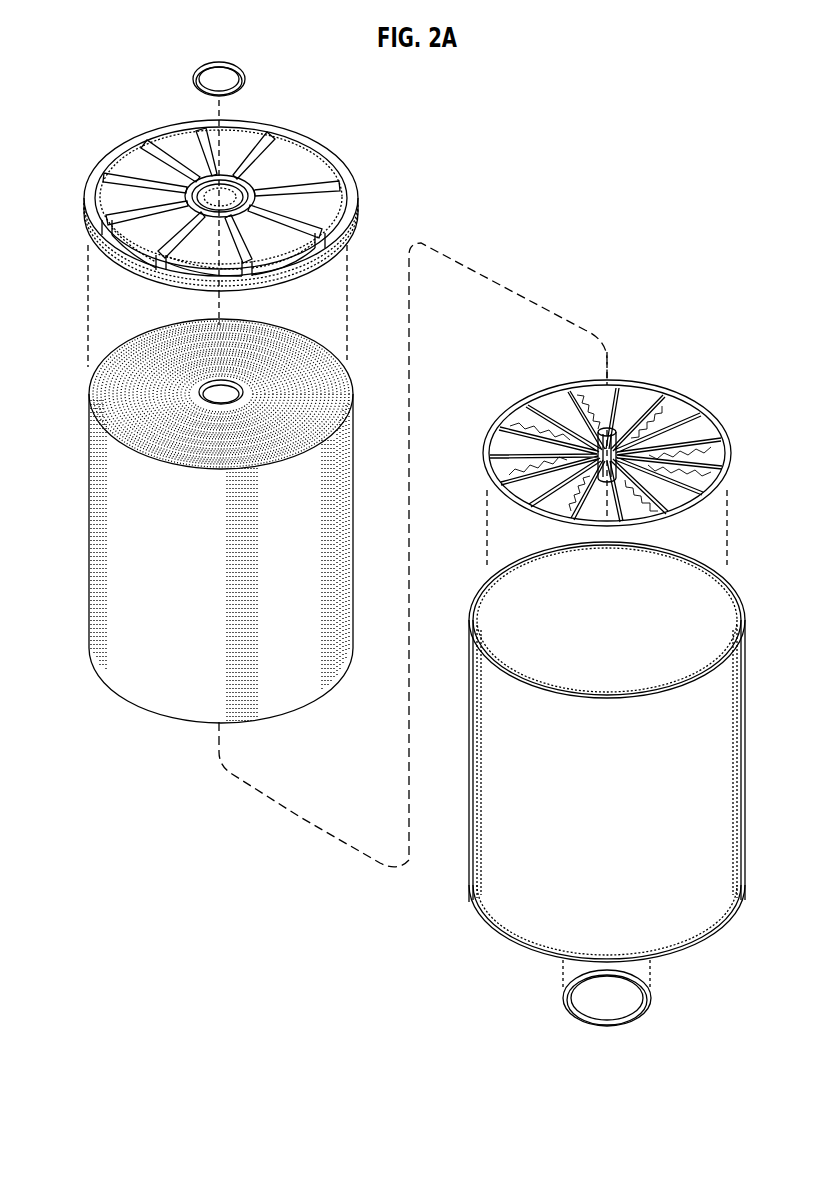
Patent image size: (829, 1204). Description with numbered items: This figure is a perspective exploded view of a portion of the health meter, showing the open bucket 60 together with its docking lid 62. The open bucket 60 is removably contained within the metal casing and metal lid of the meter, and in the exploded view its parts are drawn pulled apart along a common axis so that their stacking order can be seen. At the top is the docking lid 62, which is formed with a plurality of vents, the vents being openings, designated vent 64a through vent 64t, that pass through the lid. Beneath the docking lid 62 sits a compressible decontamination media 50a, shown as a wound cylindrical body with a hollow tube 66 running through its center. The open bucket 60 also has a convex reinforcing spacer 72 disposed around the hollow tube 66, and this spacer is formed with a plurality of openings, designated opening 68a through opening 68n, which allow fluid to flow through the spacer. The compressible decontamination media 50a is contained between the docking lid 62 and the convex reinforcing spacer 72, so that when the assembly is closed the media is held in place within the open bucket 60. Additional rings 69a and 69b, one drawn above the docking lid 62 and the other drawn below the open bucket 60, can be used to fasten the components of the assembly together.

The compressible decontamination media 50a is at (221, 521).
The open bucket 60 is at (607, 764).
The docking lid 62 is at (232, 189).
The vent 64a is at (100, 190).
The vent 64t is at (150, 150).
The hollow tube 66 is at (228, 384).
The opening 68a is at (583, 505).
The opening 68n is at (620, 500).
The ring 69a is at (242, 72).
The ring 69b is at (575, 1012).
The convex reinforcing spacer 72 is at (617, 460).